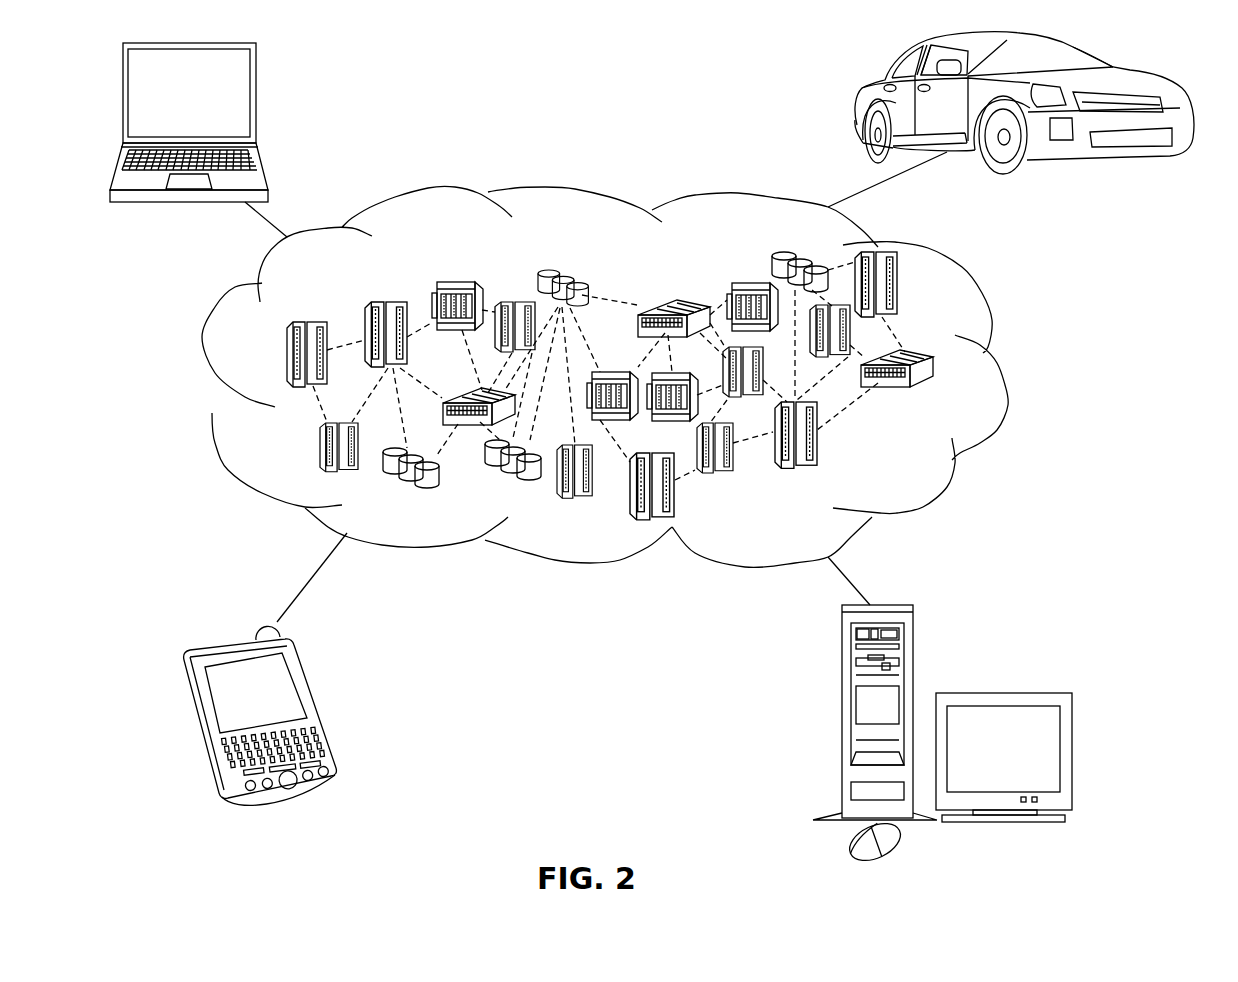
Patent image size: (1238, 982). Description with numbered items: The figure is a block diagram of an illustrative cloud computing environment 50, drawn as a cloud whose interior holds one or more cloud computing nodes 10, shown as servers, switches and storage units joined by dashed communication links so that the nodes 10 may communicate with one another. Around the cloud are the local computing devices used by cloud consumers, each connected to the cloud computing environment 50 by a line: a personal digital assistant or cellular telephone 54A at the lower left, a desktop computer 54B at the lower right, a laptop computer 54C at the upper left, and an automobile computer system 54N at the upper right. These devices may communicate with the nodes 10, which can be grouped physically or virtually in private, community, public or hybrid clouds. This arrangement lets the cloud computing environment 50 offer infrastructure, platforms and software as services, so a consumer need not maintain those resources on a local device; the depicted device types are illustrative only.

The cloud computing node 10 is at (921, 469).
The cloud computing environment 50 is at (1000, 367).
The personal digital assistant or cellular telephone 54A is at (307, 675).
The desktop computer 54B is at (842, 660).
The laptop computer 54C is at (256, 77).
The automobile computer system 54N is at (862, 95).